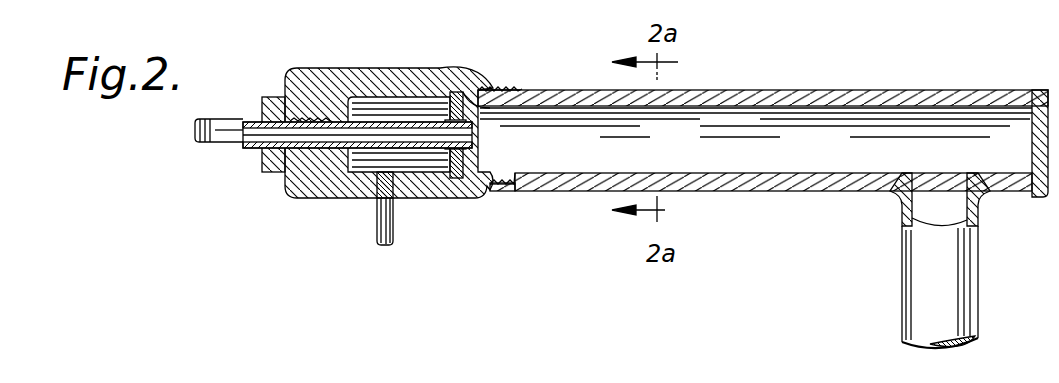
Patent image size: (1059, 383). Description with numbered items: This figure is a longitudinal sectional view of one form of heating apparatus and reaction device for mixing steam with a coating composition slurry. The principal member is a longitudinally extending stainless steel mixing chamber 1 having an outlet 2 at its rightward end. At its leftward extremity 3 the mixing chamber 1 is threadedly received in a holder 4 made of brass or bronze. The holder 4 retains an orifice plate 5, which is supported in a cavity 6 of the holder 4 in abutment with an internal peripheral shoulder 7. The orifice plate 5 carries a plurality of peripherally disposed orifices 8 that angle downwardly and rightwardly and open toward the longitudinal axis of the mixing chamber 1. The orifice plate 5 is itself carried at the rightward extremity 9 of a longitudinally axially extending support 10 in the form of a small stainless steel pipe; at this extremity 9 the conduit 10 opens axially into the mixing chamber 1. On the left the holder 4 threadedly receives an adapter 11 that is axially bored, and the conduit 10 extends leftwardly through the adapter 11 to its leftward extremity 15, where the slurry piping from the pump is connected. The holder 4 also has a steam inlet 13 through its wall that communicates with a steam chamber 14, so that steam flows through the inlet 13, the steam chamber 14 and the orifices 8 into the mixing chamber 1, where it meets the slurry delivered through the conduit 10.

The mixing chamber 1 is at (820, 90).
The outlet 2 is at (915, 312).
The leftward extremity 3 is at (488, 188).
The holder 4 is at (400, 69).
The orifice plate 5 is at (490, 90).
The cavity 6 is at (452, 175).
The internal peripheral shoulder 7 is at (443, 73).
The orifices 8 is at (499, 96).
The extremity of support 9 is at (437, 148).
The support 10 is at (372, 118).
The adapter 11 is at (274, 95).
The steam inlet 13 is at (381, 220).
The steam chamber 14 is at (367, 165).
The leftward extremity of conduit 15 is at (213, 143).